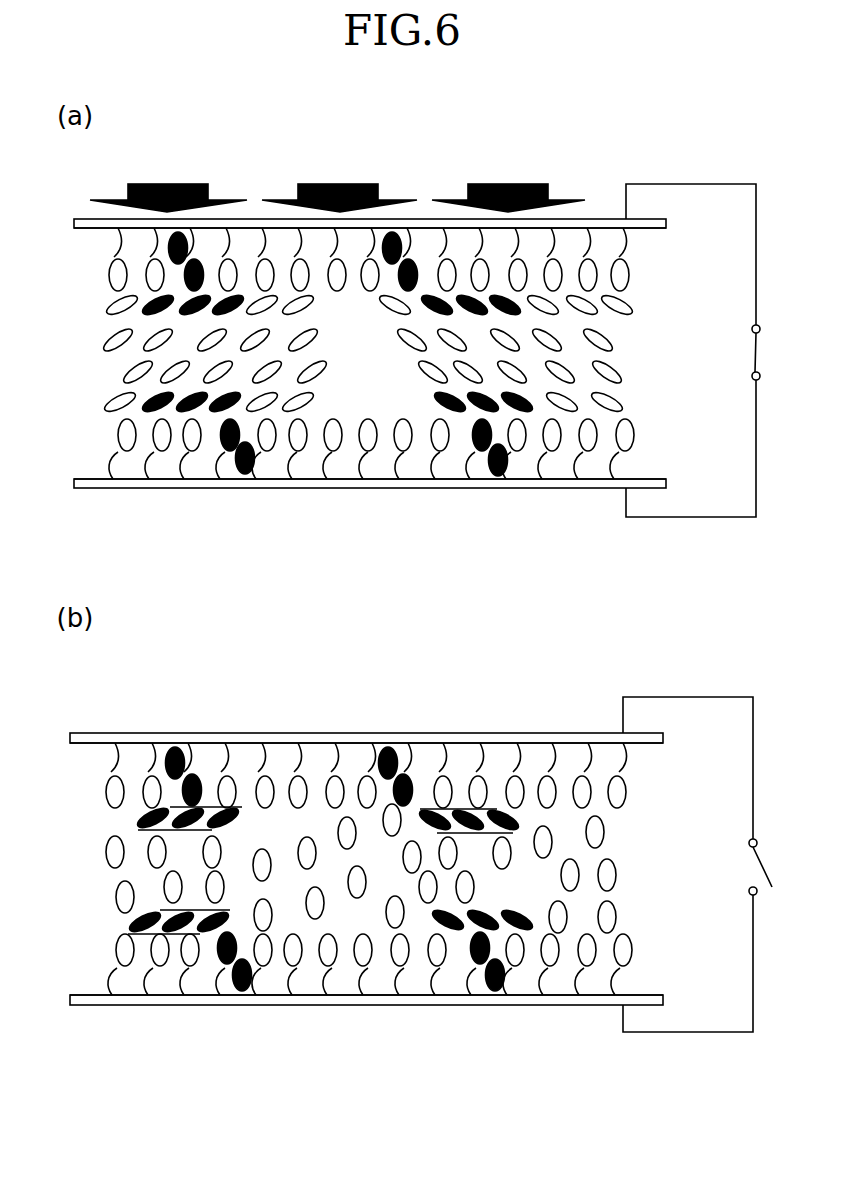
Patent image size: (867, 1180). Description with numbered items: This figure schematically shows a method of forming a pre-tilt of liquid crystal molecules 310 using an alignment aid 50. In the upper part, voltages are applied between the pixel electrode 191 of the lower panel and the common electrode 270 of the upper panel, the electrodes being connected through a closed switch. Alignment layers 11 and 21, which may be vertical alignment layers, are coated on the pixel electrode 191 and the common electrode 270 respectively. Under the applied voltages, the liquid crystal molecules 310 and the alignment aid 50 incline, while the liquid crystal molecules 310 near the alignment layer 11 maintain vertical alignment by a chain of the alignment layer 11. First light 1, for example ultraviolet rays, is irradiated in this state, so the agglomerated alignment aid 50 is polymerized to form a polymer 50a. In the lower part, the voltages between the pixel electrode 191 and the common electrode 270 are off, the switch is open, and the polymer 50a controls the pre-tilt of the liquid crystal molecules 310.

The first light 1 is at (525, 185).
The alignment layer 11 is at (281, 489).
The alignment layer 21 is at (281, 235).
The pixel electrode 191 is at (93, 479).
The common electrode 270 is at (92, 230).
The liquid crystal molecules 310 is at (627, 305).
The alignment aid 50 is at (513, 316).
The polymer 50a is at (482, 835).